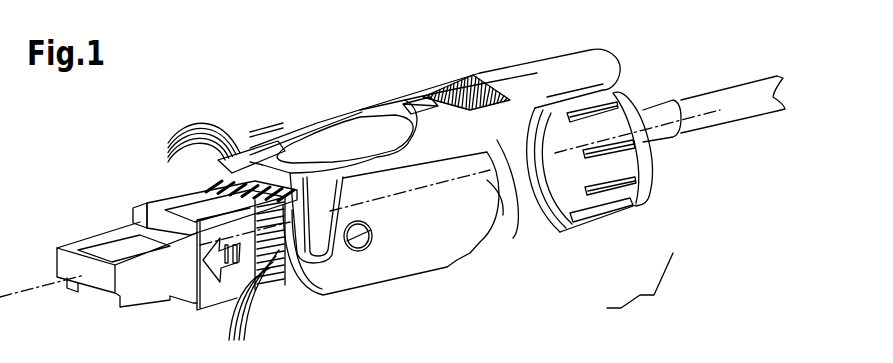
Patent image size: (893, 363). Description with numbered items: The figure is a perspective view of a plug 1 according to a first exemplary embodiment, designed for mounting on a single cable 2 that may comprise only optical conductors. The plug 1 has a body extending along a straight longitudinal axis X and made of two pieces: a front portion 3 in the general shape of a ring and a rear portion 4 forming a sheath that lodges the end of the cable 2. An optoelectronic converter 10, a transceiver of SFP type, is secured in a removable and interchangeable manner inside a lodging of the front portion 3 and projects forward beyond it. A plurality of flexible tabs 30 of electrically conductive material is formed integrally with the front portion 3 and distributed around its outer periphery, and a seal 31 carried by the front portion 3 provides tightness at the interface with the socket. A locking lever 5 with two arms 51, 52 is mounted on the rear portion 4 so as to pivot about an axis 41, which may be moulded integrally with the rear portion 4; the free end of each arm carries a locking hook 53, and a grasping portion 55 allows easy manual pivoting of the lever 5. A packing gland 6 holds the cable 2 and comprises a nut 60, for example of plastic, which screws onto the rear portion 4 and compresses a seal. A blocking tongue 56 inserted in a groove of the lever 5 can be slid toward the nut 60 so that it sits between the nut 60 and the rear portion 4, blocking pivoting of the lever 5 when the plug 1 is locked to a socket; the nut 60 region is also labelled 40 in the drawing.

The plug 1 is at (282, 78).
The cable 2 is at (727, 107).
The front portion 3 is at (205, 287).
The rear portion 4 is at (302, 152).
The locking lever 5 is at (398, 100).
The packing gland 6 is at (640, 285).
The optoelectronic converter 10 is at (63, 258).
The flexible tabs 30 is at (208, 242).
The seal 31 is at (263, 167).
The nut 40 is at (533, 200).
The pivoting axis 41 is at (358, 237).
The arm 51 is at (452, 220).
The arm 52 is at (331, 123).
The locking hook 53 is at (313, 275).
The grasping portion 55 is at (550, 70).
The blocking tongue 56 is at (459, 80).
The nut 60 is at (600, 200).
The longitudinal axis X is at (23, 292).